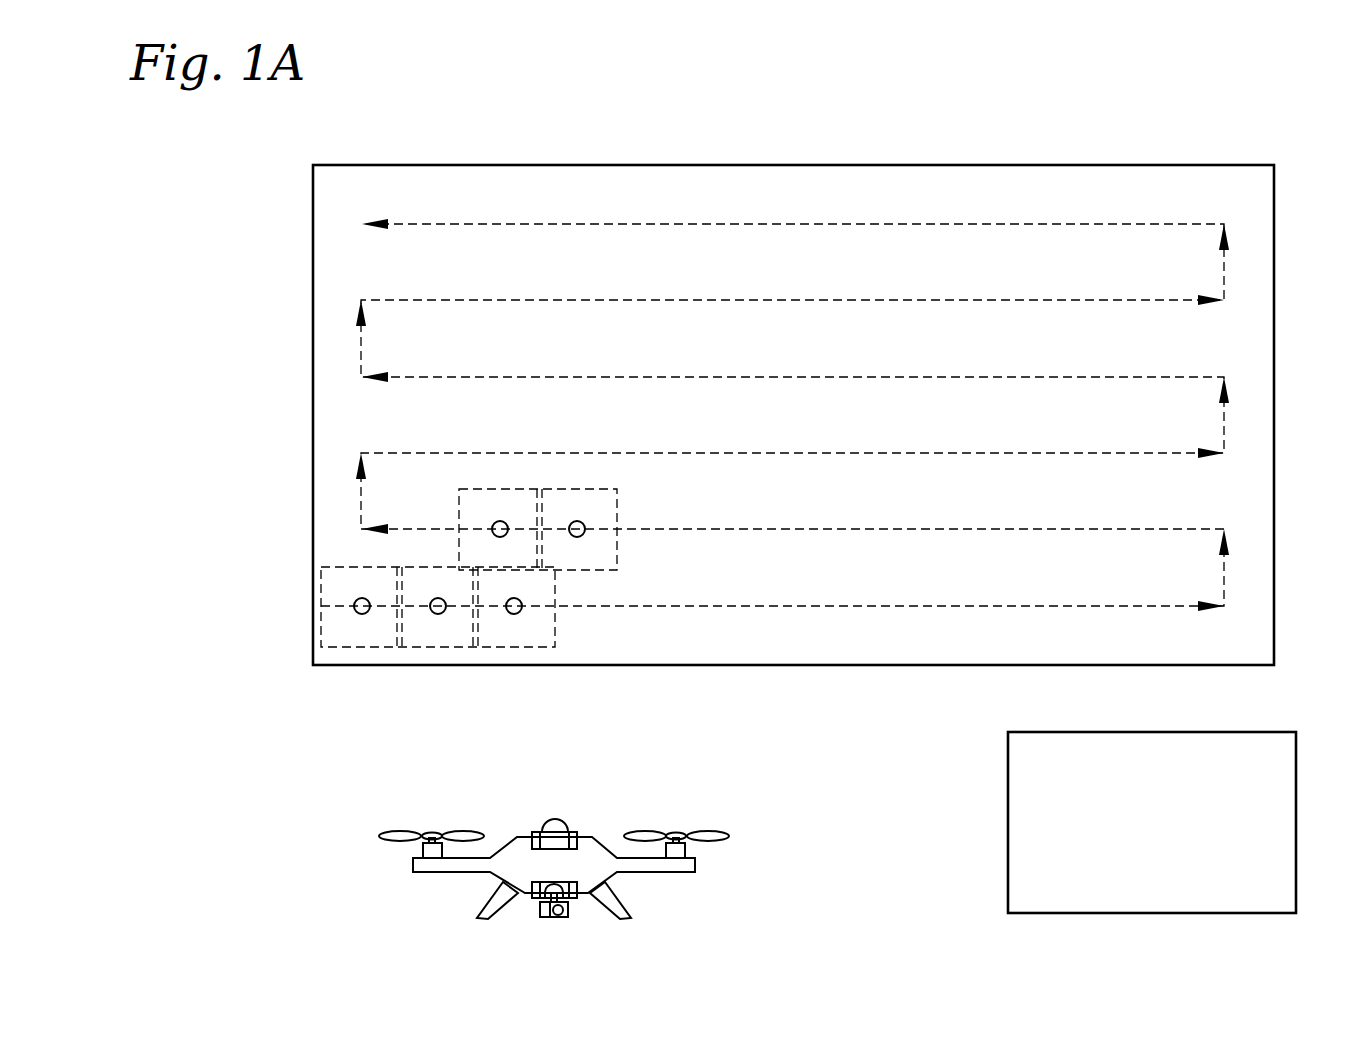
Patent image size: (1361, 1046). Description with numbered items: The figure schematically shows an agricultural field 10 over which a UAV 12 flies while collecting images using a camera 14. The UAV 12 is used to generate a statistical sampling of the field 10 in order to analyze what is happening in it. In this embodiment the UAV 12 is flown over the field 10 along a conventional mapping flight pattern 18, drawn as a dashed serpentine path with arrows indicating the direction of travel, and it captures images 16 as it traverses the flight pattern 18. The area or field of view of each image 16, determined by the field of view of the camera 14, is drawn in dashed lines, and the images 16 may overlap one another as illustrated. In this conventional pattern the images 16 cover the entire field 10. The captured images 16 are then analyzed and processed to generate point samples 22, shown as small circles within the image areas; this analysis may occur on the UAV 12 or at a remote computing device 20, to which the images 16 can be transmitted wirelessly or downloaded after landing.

The agricultural field 10 is at (1246, 323).
The UAV 12 is at (589, 828).
The camera 14 is at (567, 917).
The images 16 is at (483, 488).
The mapping flight pattern 18 is at (565, 223).
The remote computing device 20 is at (1008, 887).
The point samples 22 is at (578, 522).